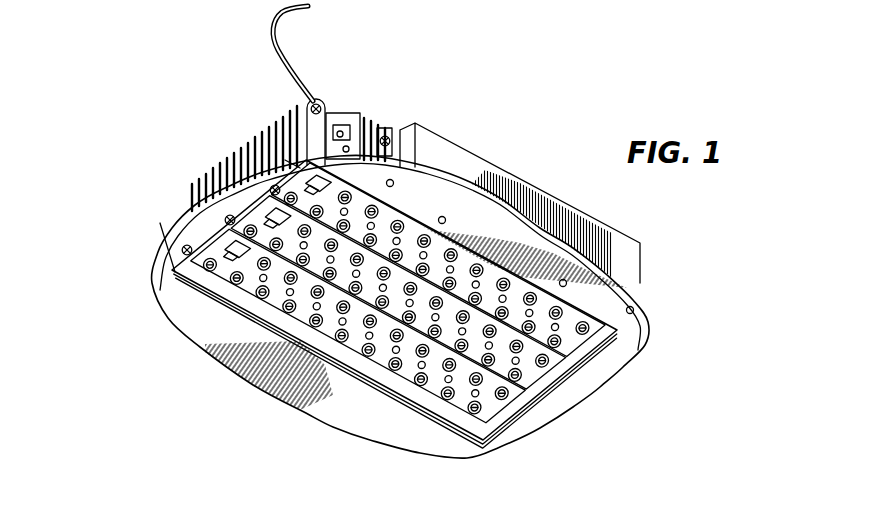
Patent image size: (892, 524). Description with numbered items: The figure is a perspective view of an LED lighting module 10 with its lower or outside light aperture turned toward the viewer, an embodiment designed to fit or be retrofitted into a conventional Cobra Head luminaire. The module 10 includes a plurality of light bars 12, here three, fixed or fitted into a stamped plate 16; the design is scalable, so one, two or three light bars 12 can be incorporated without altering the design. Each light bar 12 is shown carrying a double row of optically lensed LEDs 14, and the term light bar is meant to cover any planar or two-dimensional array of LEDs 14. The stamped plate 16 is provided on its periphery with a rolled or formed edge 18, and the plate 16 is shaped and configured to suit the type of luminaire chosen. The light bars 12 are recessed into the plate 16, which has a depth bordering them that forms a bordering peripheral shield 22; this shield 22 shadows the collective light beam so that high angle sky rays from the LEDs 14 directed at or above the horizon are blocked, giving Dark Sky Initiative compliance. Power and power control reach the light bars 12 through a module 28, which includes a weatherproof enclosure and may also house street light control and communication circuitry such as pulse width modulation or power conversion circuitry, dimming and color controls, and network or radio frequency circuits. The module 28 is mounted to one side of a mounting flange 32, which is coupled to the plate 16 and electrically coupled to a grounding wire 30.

The LED lighting module 10 is at (596, 72).
The light bars 12 is at (582, 341).
The LEDs 14 is at (396, 347).
The stamped plate 16 is at (205, 330).
The rolled or formed edge 18 is at (177, 236).
The peripheral shield 22 is at (465, 422).
The module 28 is at (474, 170).
The grounding wire 30 is at (280, 43).
The mounting flange 32 is at (333, 113).